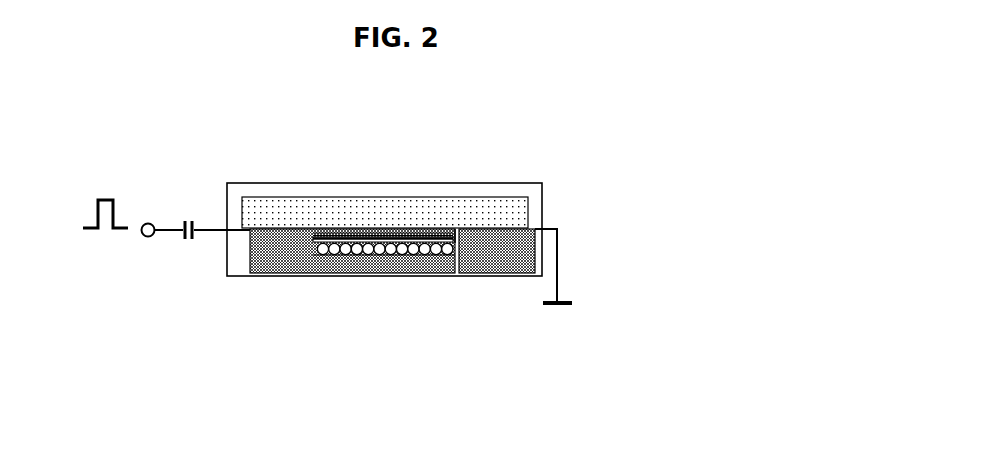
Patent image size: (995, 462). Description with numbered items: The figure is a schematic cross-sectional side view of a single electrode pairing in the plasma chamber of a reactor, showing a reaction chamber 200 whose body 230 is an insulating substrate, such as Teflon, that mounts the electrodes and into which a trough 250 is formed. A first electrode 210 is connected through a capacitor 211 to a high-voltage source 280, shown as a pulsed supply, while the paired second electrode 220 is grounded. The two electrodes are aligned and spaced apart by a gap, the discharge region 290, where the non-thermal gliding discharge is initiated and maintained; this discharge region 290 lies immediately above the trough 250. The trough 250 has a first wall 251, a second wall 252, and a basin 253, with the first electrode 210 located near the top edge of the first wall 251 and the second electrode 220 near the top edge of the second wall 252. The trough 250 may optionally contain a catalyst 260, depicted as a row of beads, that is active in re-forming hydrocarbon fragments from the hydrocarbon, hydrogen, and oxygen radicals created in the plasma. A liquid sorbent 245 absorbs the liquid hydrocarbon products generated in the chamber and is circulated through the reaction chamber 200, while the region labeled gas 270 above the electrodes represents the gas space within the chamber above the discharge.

The reaction chamber 200 is at (150, 382).
The first electrode 210 is at (243, 232).
The capacitor 211 is at (188, 245).
The second electrode 220 is at (562, 228).
The body 230 is at (505, 243).
The sorbent 245 is at (432, 234).
The trough 250 is at (385, 258).
The first wall 251 is at (315, 236).
The second wall 252 is at (453, 242).
The basin 253 is at (337, 256).
The catalyst 260 is at (413, 252).
The process gas 270 is at (327, 213).
The high-voltage source 280 is at (127, 162).
The discharge region 290 is at (378, 232).